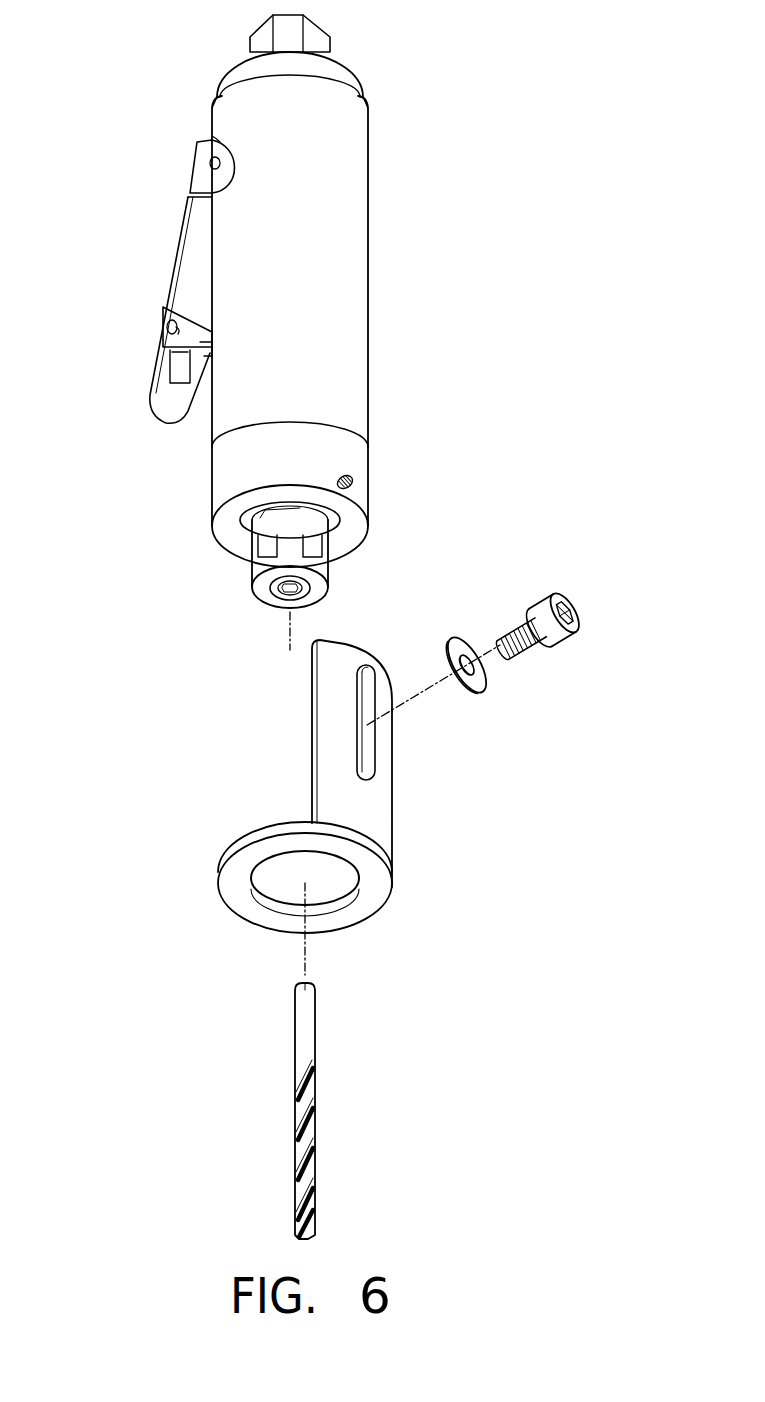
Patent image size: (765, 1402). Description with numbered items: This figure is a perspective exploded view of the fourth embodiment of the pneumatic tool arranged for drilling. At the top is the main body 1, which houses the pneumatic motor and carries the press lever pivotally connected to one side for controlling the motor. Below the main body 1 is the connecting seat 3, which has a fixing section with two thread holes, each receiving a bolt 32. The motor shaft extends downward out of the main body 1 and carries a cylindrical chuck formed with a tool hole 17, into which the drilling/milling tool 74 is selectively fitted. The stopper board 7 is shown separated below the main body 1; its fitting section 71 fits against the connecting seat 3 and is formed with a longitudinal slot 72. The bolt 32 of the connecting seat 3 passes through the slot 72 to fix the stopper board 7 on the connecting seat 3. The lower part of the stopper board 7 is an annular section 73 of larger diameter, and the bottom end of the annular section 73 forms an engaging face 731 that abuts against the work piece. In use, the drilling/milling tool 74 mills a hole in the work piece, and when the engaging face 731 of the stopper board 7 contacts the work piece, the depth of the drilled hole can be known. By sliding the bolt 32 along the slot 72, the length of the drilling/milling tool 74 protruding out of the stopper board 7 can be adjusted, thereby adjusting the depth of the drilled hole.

The main body 1 is at (368, 302).
The connecting seat 3 is at (318, 463).
The tool hole 17 is at (291, 592).
The stopper board 7 is at (140, 674).
The fitting section 71 is at (406, 763).
The longitudinal slot 72 is at (362, 743).
The annular section 73 is at (316, 898).
The engaging face 731 is at (375, 882).
The drilling/milling tool 74 is at (305, 1047).
The bolt 32 is at (537, 612).